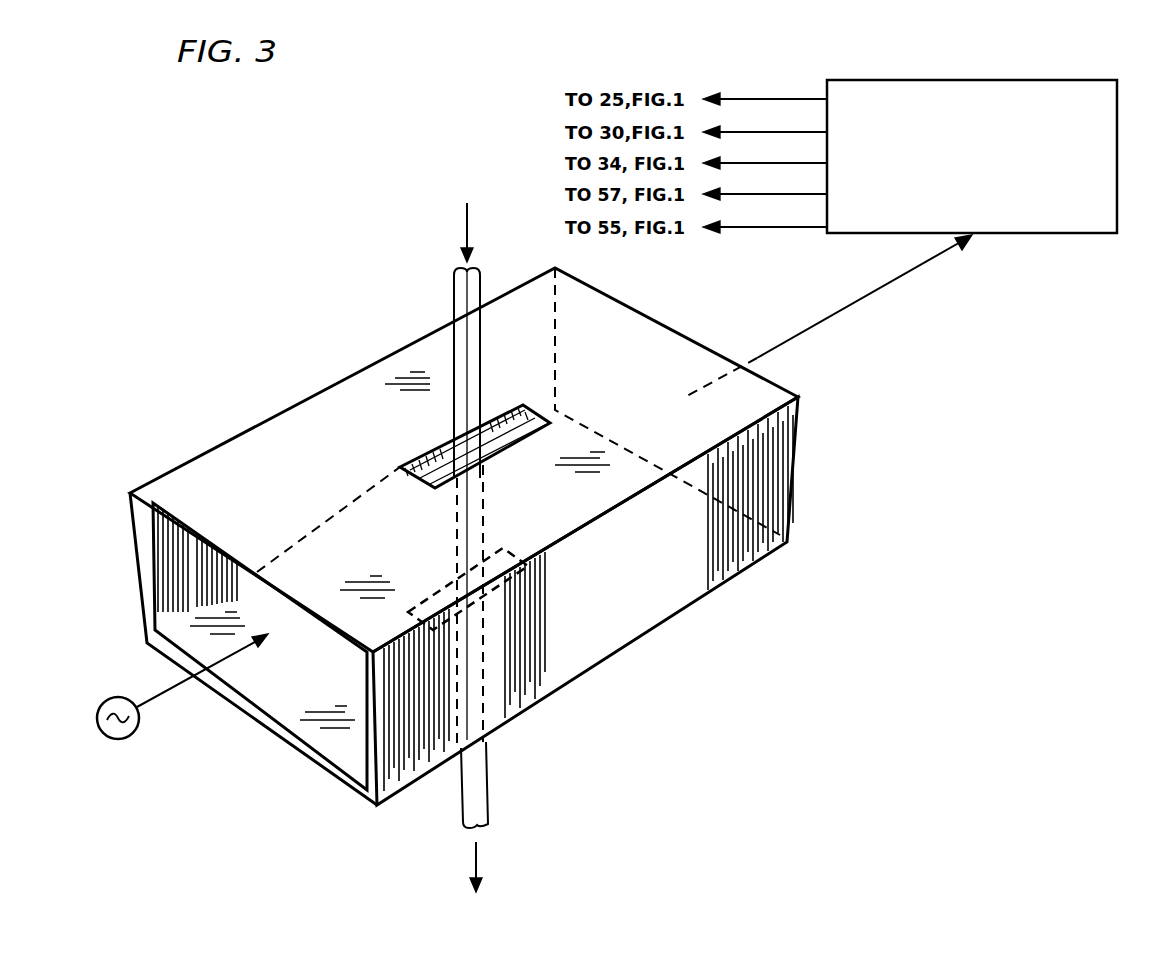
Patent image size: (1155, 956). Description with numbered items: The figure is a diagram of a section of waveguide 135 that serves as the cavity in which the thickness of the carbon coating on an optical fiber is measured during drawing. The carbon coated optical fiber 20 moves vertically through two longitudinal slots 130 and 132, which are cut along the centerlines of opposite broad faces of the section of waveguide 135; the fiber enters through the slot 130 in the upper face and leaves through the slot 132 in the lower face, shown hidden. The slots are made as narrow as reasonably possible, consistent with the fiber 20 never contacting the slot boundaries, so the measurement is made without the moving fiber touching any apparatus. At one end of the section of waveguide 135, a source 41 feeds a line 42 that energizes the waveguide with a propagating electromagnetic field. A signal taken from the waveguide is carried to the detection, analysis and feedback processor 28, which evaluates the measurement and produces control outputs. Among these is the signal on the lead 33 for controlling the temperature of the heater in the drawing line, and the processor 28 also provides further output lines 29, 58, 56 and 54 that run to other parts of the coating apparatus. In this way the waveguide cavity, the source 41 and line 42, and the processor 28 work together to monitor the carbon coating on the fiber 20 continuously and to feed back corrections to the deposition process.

The optical fiber 20 is at (480, 290).
The detection, analysis and feedback processor 28 is at (1053, 80).
The output line to 25 29 is at (742, 98).
The lead 33 is at (764, 131).
The output line to 34 58 is at (776, 162).
The output line to 57 56 is at (780, 193).
The output line to 55 54 is at (784, 228).
The source 41 is at (113, 697).
The line 42 is at (170, 694).
The longitudinal slot 130 is at (530, 405).
The longitudinal slot 132 is at (530, 566).
The section of waveguide 135 is at (245, 447).